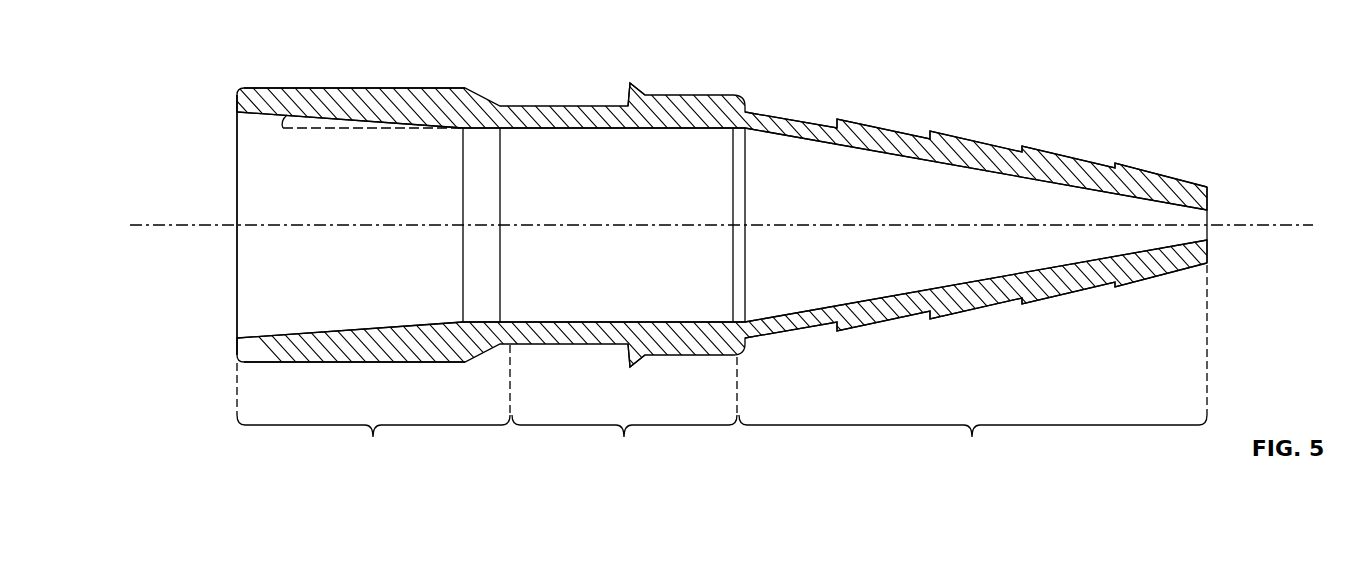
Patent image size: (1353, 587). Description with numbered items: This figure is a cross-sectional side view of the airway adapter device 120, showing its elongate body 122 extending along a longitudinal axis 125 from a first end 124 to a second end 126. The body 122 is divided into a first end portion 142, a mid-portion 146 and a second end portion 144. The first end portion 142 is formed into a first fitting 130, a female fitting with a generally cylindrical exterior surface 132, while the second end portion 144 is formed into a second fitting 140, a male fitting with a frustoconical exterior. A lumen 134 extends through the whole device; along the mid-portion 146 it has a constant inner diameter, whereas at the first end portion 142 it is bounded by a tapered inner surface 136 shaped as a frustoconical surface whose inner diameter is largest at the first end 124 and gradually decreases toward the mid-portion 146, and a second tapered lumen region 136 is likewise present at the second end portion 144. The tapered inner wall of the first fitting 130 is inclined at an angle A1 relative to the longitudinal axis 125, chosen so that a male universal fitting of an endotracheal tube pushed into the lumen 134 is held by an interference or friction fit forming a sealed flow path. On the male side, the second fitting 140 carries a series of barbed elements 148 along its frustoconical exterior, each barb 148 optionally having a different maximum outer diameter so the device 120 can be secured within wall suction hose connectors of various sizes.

The airway adapter device 120 is at (1248, 103).
The elongate body 122 is at (596, 106).
The first end 124 is at (237, 180).
The longitudinal axis 125 is at (1263, 223).
The second end 126 is at (1208, 252).
The first fitting 130 is at (382, 362).
The exterior surface 132 is at (393, 88).
The lumen 134 is at (600, 200).
The tapered inner surface 136 is at (372, 327).
The second fitting 140 is at (809, 123).
The first end portion 142 is at (373, 407).
The second end portion 144 is at (973, 367).
The mid-portion 146 is at (624, 413).
The barbed elements 148 is at (883, 321).
The angle A1 is at (360, 137).